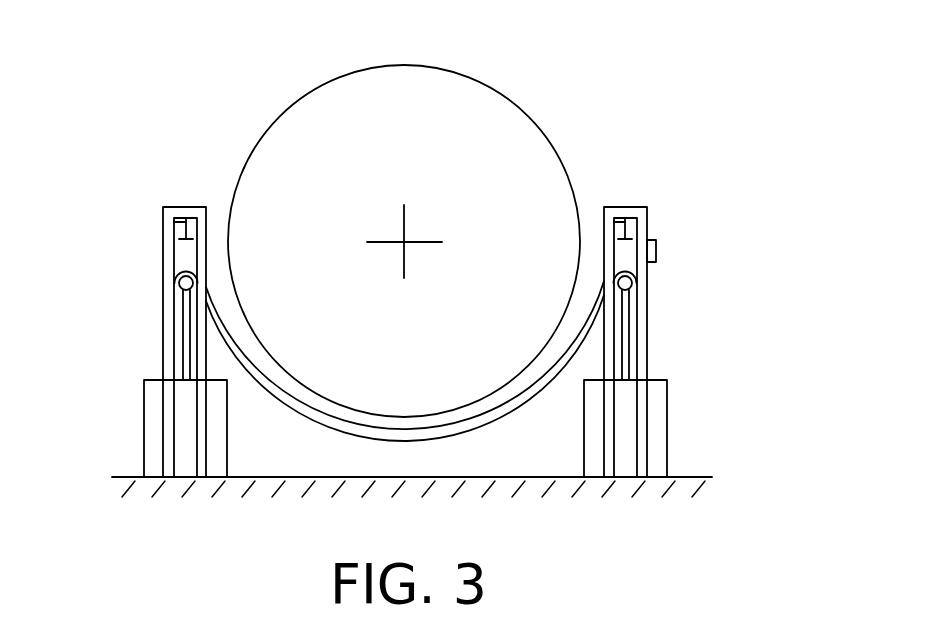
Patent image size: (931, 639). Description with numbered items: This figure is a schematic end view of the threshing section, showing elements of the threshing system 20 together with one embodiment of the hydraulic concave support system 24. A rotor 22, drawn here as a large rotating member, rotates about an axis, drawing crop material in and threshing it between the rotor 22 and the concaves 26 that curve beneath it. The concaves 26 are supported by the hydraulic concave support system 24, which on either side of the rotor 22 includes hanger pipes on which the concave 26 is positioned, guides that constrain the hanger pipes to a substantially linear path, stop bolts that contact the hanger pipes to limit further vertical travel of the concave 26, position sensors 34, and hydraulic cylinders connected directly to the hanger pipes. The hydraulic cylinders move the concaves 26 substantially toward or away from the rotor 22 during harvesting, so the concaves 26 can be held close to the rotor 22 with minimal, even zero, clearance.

The threshing system 20 is at (446, 260).
The rotor 22 is at (480, 84).
The hydraulic concave support system 24 is at (707, 316).
The concave 26 is at (505, 411).
The position sensor 34 is at (657, 250).